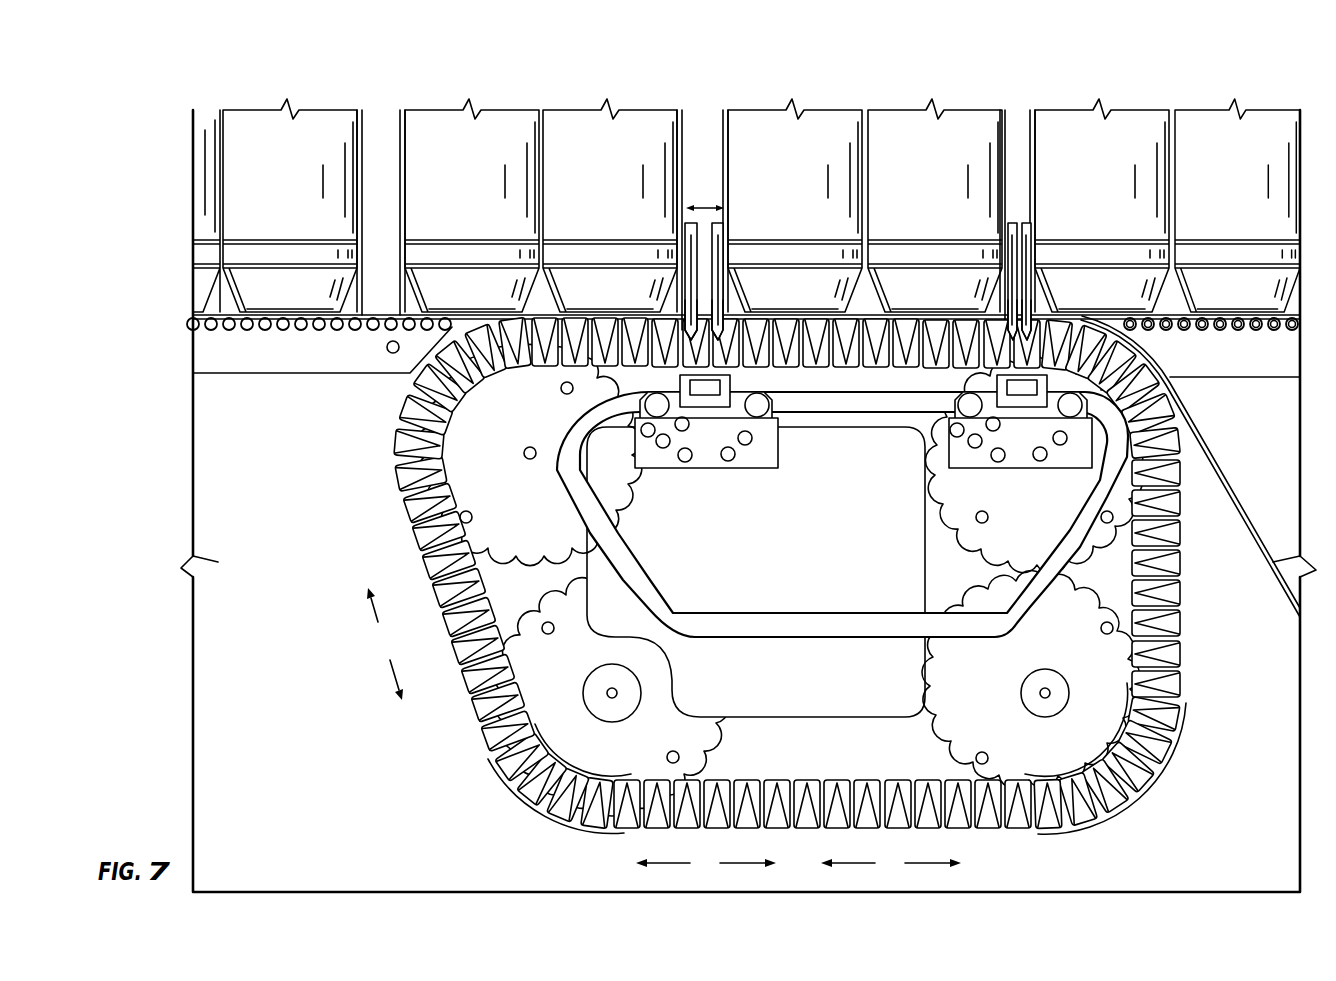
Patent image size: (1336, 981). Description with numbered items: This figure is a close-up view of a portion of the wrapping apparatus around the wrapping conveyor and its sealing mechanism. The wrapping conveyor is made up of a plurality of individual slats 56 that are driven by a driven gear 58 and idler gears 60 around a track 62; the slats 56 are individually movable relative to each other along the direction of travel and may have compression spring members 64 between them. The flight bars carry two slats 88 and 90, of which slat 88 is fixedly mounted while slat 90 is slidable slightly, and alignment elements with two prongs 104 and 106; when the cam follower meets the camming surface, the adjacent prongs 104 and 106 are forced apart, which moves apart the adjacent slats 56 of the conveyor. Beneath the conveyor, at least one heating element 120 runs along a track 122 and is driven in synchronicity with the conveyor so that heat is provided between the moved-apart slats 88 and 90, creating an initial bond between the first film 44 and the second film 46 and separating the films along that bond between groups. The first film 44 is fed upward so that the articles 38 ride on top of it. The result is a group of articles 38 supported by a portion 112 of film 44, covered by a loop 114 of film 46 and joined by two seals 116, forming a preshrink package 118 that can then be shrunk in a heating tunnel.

The preshrink package 118 is at (300, 93).
The loop of film 114 is at (364, 160).
The second film 46 is at (728, 108).
The articles 38 is at (1133, 118).
The slat 90 is at (690, 222).
The slat 88 is at (719, 228).
The prong 106 is at (677, 310).
The prong 104 is at (733, 312).
The first film 44 is at (548, 345).
The portion of film 112 is at (230, 328).
The seals 116 is at (397, 327).
The slats 56 is at (396, 536).
The driven gear 58 is at (1117, 497).
The idler gears 60 is at (453, 443).
The track 62 is at (1107, 818).
The track 122 is at (790, 613).
The heating element 120 is at (760, 475).
The compression spring members 64 is at (463, 600).